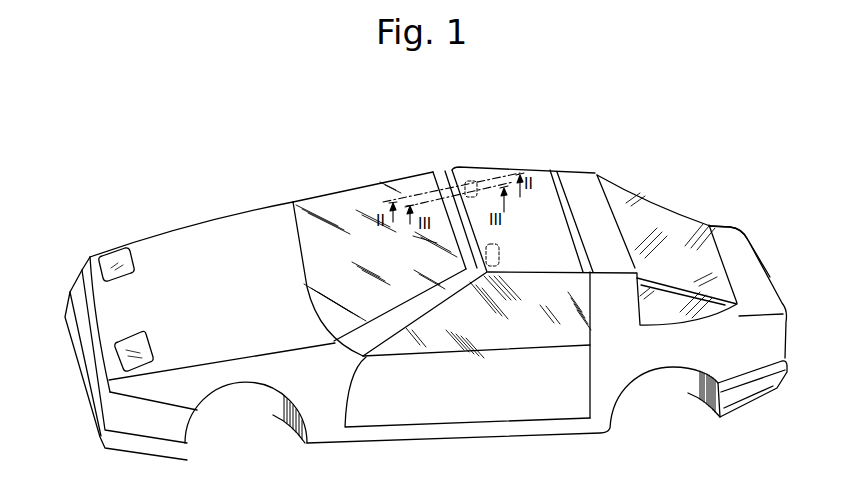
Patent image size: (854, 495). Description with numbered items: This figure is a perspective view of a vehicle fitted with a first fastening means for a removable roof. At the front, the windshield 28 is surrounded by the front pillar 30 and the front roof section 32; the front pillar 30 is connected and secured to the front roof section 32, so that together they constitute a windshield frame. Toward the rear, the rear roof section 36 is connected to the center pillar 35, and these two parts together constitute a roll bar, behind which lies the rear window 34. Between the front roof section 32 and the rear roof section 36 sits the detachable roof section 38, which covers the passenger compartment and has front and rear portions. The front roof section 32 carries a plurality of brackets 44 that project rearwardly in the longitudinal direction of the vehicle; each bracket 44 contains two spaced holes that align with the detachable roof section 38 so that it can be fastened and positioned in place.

The windshield 28 is at (334, 200).
The front pillar 30 is at (390, 328).
The front roof section 32 is at (444, 171).
The rear window 34 is at (708, 226).
The center pillar 35 is at (618, 317).
The rear roof section 36 is at (596, 180).
The detachable roof section 38 is at (548, 170).
The bracket 44 is at (454, 168).